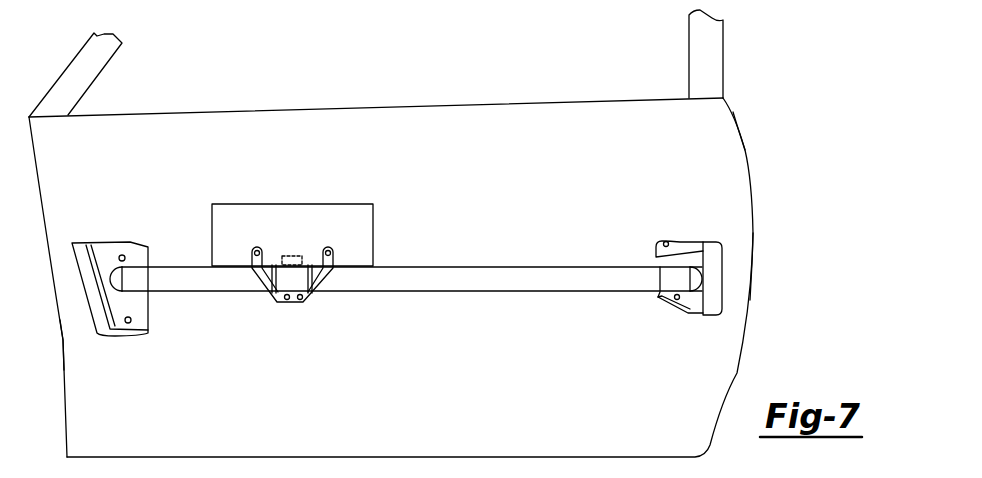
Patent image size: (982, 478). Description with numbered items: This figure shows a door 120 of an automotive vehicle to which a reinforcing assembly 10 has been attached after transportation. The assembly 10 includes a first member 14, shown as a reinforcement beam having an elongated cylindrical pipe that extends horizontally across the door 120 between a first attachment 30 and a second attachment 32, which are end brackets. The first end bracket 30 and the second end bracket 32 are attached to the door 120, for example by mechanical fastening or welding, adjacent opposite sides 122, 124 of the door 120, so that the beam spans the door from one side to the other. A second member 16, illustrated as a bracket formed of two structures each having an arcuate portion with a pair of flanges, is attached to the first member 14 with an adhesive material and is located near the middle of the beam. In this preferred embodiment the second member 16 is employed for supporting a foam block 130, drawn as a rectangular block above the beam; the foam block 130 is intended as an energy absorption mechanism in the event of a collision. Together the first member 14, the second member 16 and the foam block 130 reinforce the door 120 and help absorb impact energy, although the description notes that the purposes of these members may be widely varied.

The assembly 10 is at (340, 370).
The first member 14 is at (537, 258).
The second member 16 is at (262, 303).
The first attachment 30 is at (110, 250).
The second attachment 32 is at (690, 310).
The door 120 is at (733, 182).
The side of the door 122 is at (63, 353).
The side of the door 124 is at (752, 278).
The foam block 130 is at (372, 221).